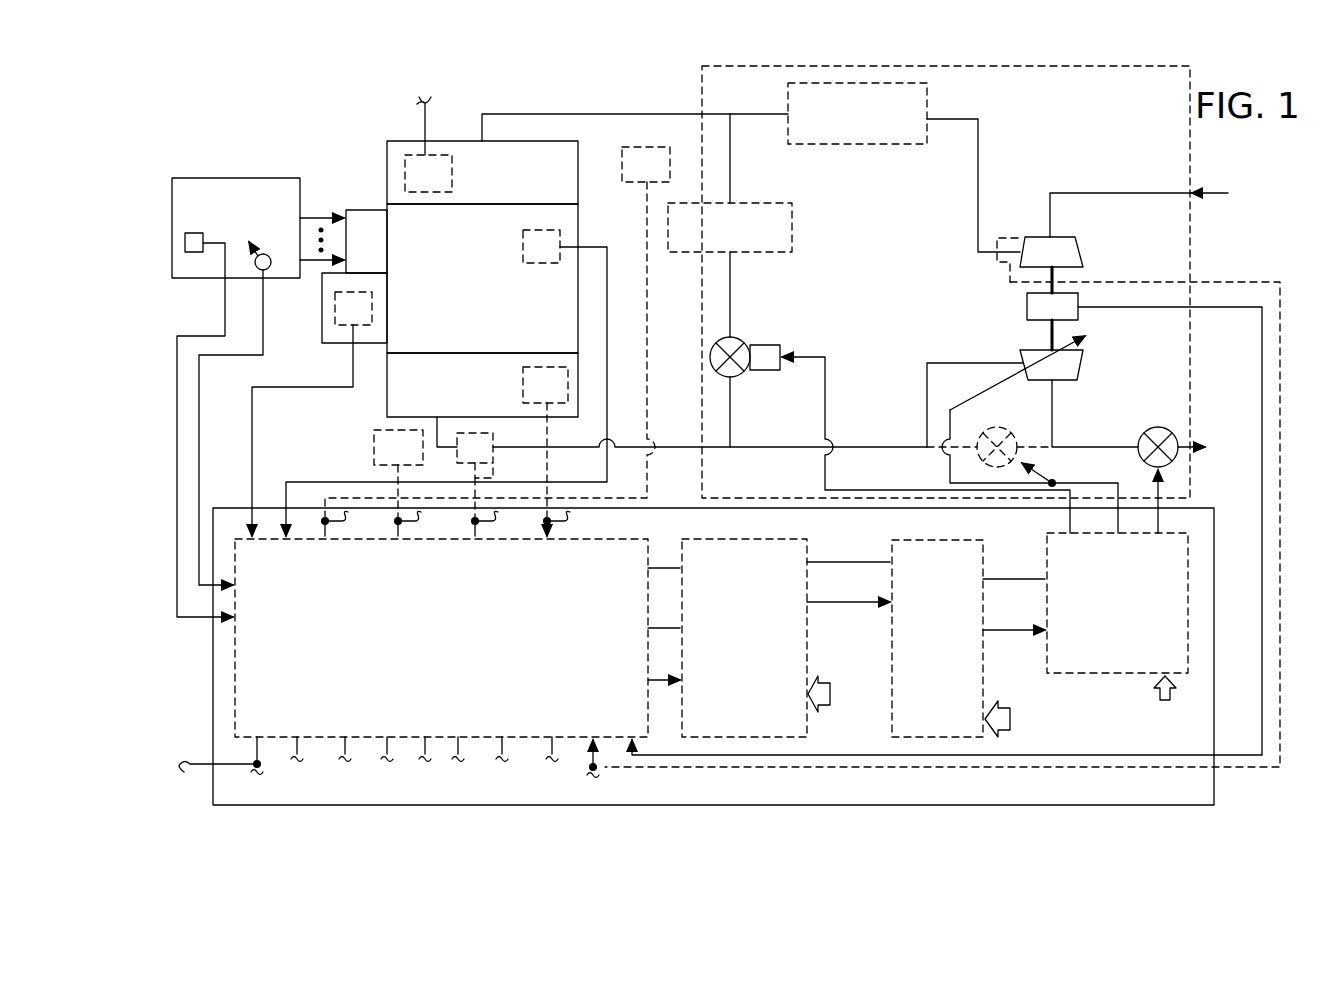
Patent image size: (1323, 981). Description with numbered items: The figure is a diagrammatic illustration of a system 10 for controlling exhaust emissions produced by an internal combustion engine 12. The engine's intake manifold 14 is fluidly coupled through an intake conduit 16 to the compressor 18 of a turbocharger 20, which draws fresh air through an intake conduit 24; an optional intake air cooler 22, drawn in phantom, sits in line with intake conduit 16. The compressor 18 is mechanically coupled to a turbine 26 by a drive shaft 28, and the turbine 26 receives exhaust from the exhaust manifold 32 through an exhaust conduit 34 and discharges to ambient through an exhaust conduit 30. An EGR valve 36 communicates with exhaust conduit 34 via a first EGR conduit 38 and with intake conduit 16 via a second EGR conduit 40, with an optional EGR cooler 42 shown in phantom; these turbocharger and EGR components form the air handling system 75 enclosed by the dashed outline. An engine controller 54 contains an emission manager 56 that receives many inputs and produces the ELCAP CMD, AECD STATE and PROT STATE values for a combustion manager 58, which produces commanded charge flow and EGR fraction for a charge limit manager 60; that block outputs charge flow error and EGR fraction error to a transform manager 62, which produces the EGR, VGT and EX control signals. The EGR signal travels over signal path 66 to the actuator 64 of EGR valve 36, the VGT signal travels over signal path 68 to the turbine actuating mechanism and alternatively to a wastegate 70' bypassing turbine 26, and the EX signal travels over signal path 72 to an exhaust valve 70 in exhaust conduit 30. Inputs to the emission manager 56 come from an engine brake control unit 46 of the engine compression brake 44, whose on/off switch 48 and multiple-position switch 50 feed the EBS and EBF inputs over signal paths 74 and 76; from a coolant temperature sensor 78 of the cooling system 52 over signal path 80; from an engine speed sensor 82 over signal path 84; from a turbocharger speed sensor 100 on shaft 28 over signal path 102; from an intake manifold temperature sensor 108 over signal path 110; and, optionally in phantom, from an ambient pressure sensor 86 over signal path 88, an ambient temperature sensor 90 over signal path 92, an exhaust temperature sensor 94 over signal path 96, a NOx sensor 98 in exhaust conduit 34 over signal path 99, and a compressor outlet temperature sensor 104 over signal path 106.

The system 10 is at (292, 128).
The internal combustion engine 12 is at (578, 213).
The intake manifold 14 is at (578, 160).
The intake conduit 16 is at (545, 114).
The compressor 18 is at (1080, 252).
The turbocharger 20 is at (955, 295).
The intake air cooler 22 is at (872, 145).
The intake conduit 24 is at (1090, 193).
The turbocharger turbine 26 is at (1080, 373).
The drive shaft 28 is at (1050, 330).
The exhaust conduit 30 is at (1052, 423).
The exhaust manifold 32 is at (387, 385).
The exhaust conduit 34 is at (870, 447).
The EGR valve 36 is at (745, 342).
The first EGR conduit 38 is at (730, 418).
The second EGR conduit 40 is at (730, 294).
The EGR cooler 42 is at (792, 226).
The engine compression brake 44 is at (356, 212).
The engine brake control unit 46 is at (212, 178).
The on/off switch 48 is at (185, 243).
The multiple-position switch 50 is at (262, 271).
The cooling system 52 is at (322, 343).
The engine controller 54 is at (213, 670).
The emission manager 56 is at (235, 643).
The combustion manager 58 is at (807, 656).
The charge limit manager 60 is at (983, 660).
The transform manager 62 is at (1075, 675).
The EGR valve actuator 64 is at (775, 345).
The signal path 66 is at (825, 378).
The signal path 68 is at (972, 399).
The exhaust valve 70 is at (1197, 435).
The wastegate 70' is at (1022, 459).
The exhaust throttle signal path 72 is at (1156, 495).
The signal path 74 is at (224, 294).
The air handling system 75 is at (702, 82).
The signal path 76 is at (199, 360).
The coolant temperature sensor 78 is at (335, 310).
The signal path 80 is at (252, 400).
The engine speed sensor 82 is at (537, 264).
The signal path 84 is at (607, 250).
The ambient pressure sensor 86 is at (657, 147).
The signal path 88 is at (650, 405).
The ambient temperature sensor 90 is at (374, 446).
The signal path 92 is at (380, 471).
The exhaust temperature sensor 94 is at (545, 367).
The signal path 96 is at (553, 430).
The NOx sensor 98 is at (493, 440).
The signal path 99 is at (493, 477).
The turbocharger speed sensor 100 is at (1027, 305).
The signal path 102 is at (1262, 323).
The compressor outlet temperature sensor 104 is at (1005, 238).
The signal path 106 is at (1235, 282).
The intake manifold temperature sensor 108 is at (405, 172).
The signal path 110 is at (424, 120).